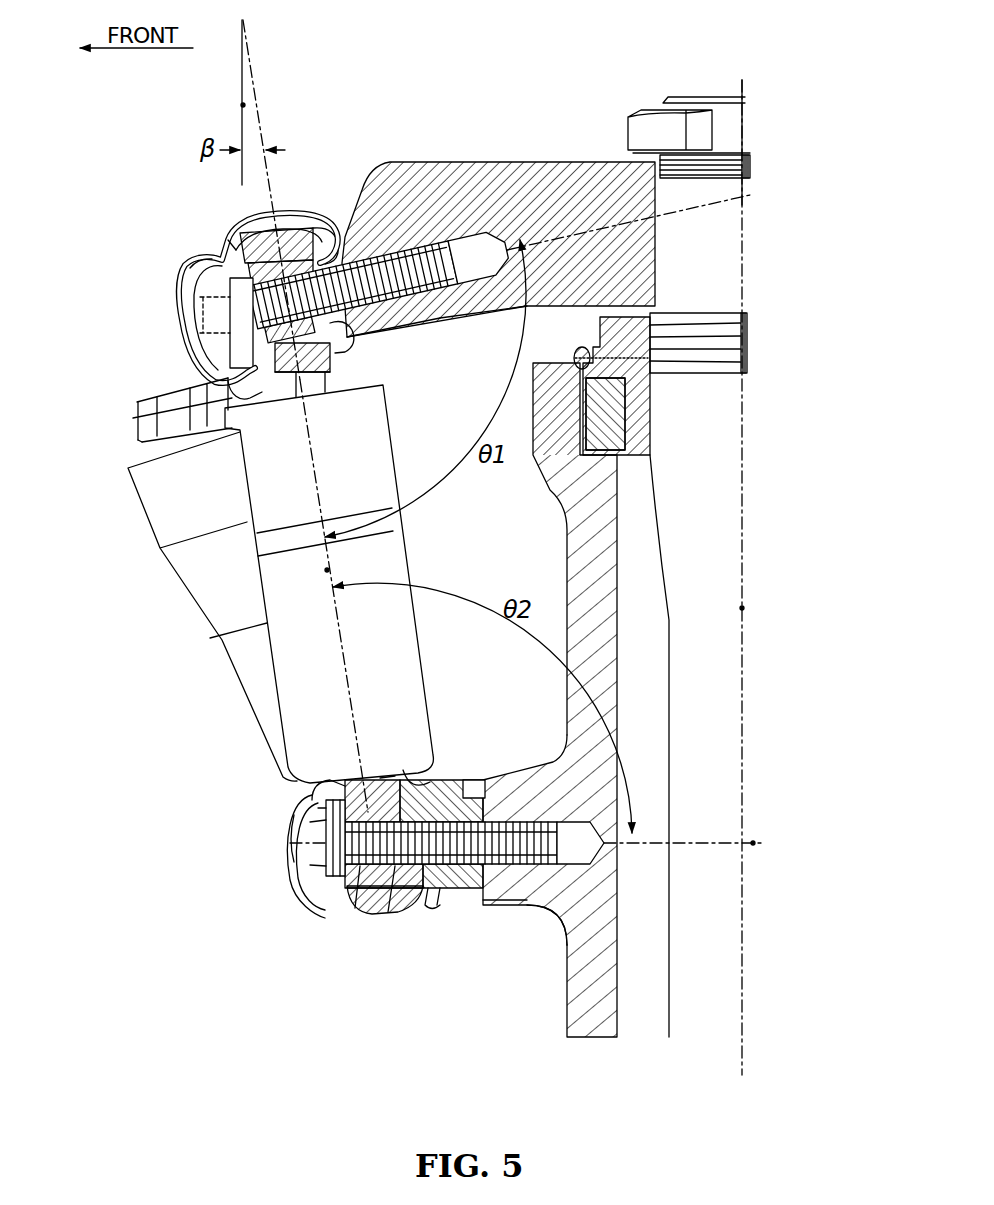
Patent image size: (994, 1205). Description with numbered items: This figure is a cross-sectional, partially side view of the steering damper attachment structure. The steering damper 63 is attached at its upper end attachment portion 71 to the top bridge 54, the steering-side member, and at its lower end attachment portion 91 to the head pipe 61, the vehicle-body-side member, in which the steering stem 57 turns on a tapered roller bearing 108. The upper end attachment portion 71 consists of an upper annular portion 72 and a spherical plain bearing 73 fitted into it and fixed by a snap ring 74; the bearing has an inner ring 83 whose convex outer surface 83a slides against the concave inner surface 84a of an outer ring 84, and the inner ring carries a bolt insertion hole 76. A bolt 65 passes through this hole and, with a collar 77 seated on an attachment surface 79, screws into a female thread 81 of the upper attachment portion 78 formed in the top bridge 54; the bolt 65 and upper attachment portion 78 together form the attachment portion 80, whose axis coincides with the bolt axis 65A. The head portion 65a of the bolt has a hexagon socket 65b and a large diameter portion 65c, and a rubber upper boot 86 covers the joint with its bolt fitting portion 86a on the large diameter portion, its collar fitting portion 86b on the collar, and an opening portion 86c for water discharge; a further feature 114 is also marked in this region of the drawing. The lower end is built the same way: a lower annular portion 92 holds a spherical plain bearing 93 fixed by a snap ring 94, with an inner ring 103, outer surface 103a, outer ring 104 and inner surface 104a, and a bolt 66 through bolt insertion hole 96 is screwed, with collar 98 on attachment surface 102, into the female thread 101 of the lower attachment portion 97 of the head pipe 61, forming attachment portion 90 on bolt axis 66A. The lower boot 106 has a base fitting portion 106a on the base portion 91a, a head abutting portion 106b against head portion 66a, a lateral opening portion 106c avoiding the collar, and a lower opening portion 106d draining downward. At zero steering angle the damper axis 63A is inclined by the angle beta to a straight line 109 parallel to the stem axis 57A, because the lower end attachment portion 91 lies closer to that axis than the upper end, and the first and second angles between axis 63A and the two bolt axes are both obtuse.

The top bridge 54 is at (507, 163).
The steering stem 57 is at (683, 962).
The axis of the steering stem 57A is at (742, 608).
The head pipe 61 is at (573, 592).
The steering damper 63 is at (260, 600).
The axis of the steering damper 63A is at (330, 568).
The bolt 65 is at (200, 364).
The axis of the bolt 65A is at (717, 200).
The head portion 65a is at (190, 376).
The hexagon socket 65b is at (190, 334).
The large diameter portion 65c is at (200, 398).
The bolt 66 is at (320, 878).
The head portion 66a is at (323, 865).
The axis of the bolt 66A is at (753, 845).
The upper end attachment portion 71 is at (230, 235).
The upper annular portion 72 is at (312, 240).
The spherical plain bearing 73 is at (287, 247).
The snap ring 74 is at (242, 226).
The bolt insertion hole 76 is at (175, 280).
The collar 77 is at (378, 240).
The upper attachment portion 78 is at (457, 313).
The attachment surface 79 is at (360, 333).
The attachment portion 80 is at (483, 247).
The female thread 81 is at (437, 247).
The inner ring 83 is at (181, 275).
The outer surface 83a is at (307, 397).
The outer ring 84 is at (322, 233).
The inner surface 84a is at (207, 400).
The upper boot 86 is at (205, 420).
The bolt fitting portion 86a is at (185, 310).
The collar fitting portion 86b is at (355, 345).
The opening portion 86c is at (340, 365).
The attachment portion 90 is at (568, 850).
The lower end attachment portion 91 is at (372, 930).
The base portion 91a is at (388, 773).
The lower annular portion 92 is at (365, 910).
The spherical plain bearing 93 is at (392, 912).
The snap ring 94 is at (350, 912).
The bolt insertion hole 96 is at (320, 852).
The lower attachment portion 97 is at (518, 902).
The collar 98 is at (478, 782).
The female thread 101 is at (520, 790).
The attachment surface 102 is at (525, 912).
The inner ring 103 is at (347, 905).
The outer surface 103a is at (320, 778).
The outer ring 104 is at (457, 780).
The inner surface 104a is at (318, 810).
The lower boot 106 is at (436, 906).
The base fitting portion 106a is at (432, 776).
The head abutting portion 106b is at (294, 828).
The lateral opening portion 106c is at (478, 907).
The lower opening portion 106d is at (422, 912).
The tapered roller bearing 108 is at (654, 412).
The straight line 109 is at (243, 105).
The bore 114 is at (345, 400).